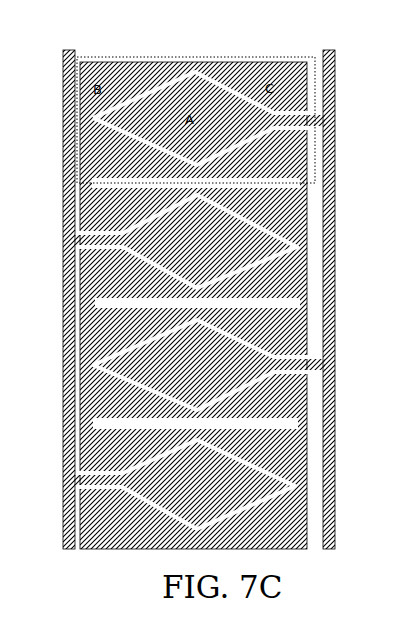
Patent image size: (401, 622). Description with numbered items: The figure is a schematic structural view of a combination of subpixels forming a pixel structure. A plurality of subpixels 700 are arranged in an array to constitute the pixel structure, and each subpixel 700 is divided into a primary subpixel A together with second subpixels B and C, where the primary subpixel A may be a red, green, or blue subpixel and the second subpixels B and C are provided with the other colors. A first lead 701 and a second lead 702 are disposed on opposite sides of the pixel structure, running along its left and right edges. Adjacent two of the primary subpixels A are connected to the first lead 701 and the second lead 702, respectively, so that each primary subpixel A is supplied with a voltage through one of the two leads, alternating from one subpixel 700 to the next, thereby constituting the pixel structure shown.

The subpixel 700 is at (272, 54).
The first lead 701 is at (335, 164).
The second lead 702 is at (63, 133).